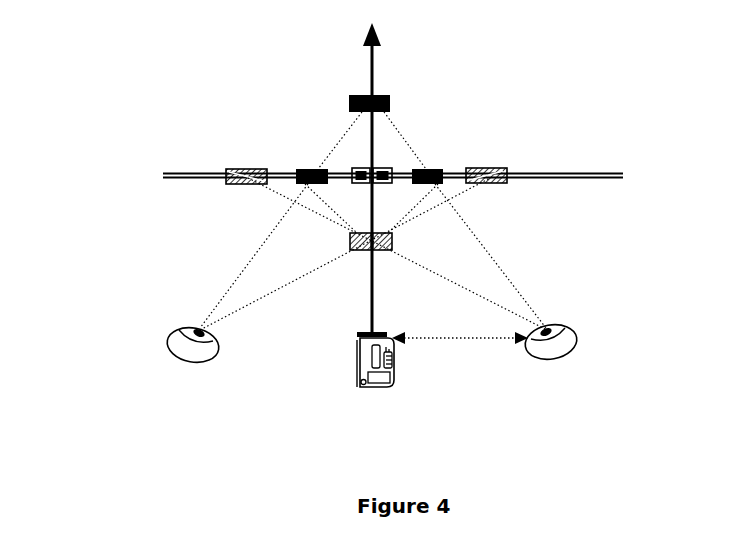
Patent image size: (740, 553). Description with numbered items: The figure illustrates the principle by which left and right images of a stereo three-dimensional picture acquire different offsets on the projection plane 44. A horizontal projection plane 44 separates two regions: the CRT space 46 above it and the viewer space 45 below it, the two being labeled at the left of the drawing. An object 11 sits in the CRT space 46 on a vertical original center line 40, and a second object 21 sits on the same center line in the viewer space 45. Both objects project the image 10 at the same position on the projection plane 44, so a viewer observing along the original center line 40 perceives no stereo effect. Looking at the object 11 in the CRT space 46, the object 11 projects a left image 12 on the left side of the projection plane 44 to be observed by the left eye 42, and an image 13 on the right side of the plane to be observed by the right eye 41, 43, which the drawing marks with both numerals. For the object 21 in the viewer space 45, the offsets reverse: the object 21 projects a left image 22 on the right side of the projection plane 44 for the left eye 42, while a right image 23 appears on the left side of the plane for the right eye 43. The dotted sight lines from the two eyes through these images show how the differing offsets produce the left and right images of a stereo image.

The image 10 is at (380, 194).
The object 11 is at (378, 177).
The left image 12 is at (314, 163).
The right image 13 is at (429, 163).
The object 21 is at (379, 260).
The left image 22 is at (486, 163).
The right image 23 is at (246, 163).
The original center line 40 is at (367, 393).
The right eye 41 is at (557, 360).
The left eye 42 is at (175, 358).
The right eye 43 is at (460, 350).
The projection plane 44 is at (163, 173).
The viewer space 45 is at (69, 254).
The CRT space 46 is at (69, 79).